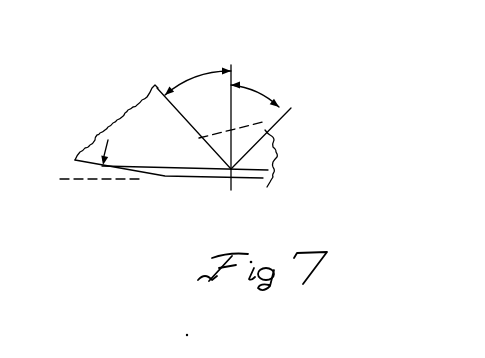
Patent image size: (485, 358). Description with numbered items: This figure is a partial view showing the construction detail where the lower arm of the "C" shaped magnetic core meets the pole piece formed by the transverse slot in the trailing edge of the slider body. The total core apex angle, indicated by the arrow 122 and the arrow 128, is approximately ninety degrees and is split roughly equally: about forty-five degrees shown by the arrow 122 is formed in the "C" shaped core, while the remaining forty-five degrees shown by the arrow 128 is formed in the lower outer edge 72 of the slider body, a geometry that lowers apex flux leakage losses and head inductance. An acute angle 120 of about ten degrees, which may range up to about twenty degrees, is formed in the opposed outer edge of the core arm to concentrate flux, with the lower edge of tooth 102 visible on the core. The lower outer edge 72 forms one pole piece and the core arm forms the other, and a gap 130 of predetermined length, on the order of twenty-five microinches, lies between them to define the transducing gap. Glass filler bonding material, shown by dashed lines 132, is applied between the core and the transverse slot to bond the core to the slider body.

The lower outer edge 72 is at (253, 176).
The lower edge of tooth 102 is at (172, 177).
The acute angle 120 is at (97, 186).
The arrow 122 is at (198, 72).
The arrow 128 is at (261, 92).
The gap 130 is at (229, 185).
The dashed lines 132 is at (237, 131).